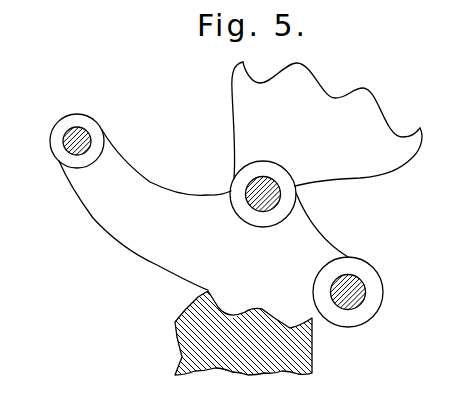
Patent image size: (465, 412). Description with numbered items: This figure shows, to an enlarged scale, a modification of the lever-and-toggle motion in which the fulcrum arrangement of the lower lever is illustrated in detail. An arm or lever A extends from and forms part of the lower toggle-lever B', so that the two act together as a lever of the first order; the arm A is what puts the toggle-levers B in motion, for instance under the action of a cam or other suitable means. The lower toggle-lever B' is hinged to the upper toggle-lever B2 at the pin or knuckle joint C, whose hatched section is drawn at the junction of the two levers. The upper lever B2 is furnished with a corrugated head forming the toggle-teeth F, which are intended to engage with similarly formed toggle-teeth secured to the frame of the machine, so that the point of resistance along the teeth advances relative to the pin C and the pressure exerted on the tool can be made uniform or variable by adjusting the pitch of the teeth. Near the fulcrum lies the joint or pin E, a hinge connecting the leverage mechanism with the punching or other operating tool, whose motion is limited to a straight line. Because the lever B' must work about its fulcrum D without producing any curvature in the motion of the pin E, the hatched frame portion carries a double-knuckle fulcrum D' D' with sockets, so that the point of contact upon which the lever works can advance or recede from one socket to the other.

The arm or lever A is at (140, 202).
The links or toggle-levers B is at (327, 161).
The upper toggle-lever B2 is at (327, 123).
The lower toggle-lever B' is at (300, 228).
The pin or knuckle joint C is at (281, 194).
The fulcrum pin D is at (244, 329).
The knuckle fulcrum D' is at (244, 329).
The joint or pin E is at (366, 291).
The toggle-teeth F is at (331, 98).